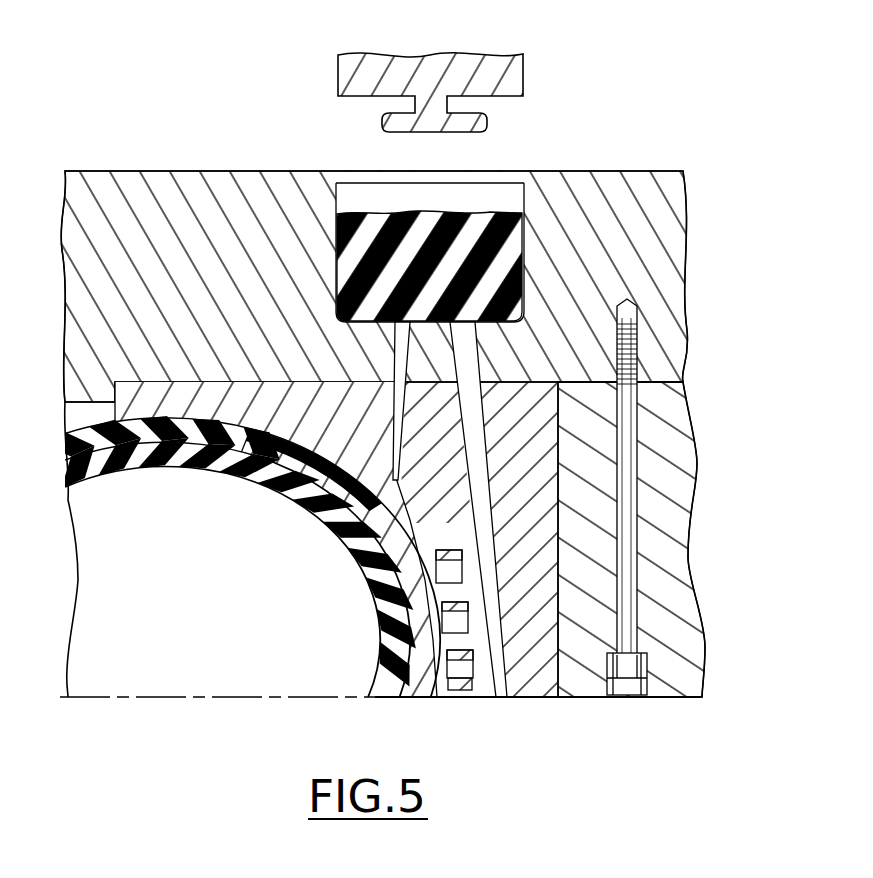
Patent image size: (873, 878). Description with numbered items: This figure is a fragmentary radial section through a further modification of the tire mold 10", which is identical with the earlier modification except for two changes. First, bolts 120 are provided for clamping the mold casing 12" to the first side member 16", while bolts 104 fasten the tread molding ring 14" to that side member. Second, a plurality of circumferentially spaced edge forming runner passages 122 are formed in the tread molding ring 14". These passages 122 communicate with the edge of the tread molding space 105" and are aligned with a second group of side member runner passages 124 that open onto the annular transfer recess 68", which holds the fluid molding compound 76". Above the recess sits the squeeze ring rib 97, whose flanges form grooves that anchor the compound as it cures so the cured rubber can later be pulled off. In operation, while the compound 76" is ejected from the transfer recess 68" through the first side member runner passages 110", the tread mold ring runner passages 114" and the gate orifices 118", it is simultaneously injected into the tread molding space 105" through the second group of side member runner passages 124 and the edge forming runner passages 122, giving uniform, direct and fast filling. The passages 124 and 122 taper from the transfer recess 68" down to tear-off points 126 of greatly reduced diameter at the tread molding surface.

The mold 10 is at (553, 64).
The mold casing 12 is at (677, 557).
The tread molding ring 14 is at (207, 480).
The first side member 16 is at (668, 190).
The annular transfer recess 68 is at (523, 190).
The fluid molding compound 76 is at (389, 222).
The rib 97 is at (432, 120).
The bolts 104 is at (477, 523).
The tread molding space 105 is at (443, 687).
The first side member runner passages 110 is at (465, 343).
The tread mold ring runner passages 114 is at (380, 500).
The gate orifices 118 is at (473, 587).
The bolts 120 is at (700, 680).
The edge forming runner passages 122 is at (278, 475).
The second group of side member runner passages 124 is at (402, 357).
The tear-off points 126 is at (340, 492).